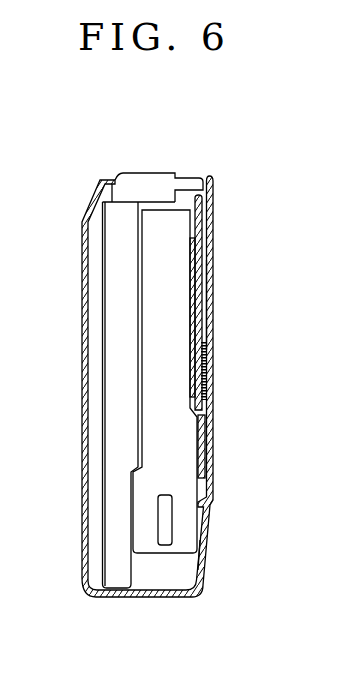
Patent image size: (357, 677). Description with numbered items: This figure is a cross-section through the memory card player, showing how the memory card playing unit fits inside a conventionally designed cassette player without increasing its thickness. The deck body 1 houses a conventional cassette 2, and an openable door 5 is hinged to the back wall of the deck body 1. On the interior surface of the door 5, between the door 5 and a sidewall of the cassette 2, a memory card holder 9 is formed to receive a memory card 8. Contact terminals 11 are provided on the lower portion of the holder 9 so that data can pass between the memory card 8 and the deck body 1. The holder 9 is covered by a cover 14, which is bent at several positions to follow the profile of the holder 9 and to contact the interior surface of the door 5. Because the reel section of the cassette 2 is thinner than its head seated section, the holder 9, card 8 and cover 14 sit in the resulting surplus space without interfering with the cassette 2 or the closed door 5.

The deck body 1 is at (85, 382).
The cassette 2 is at (193, 525).
The door 5 is at (203, 555).
The memory card 8 is at (205, 222).
The memory card holder 9 is at (207, 308).
The contact terminals 11 is at (207, 390).
The cover 14 is at (203, 432).